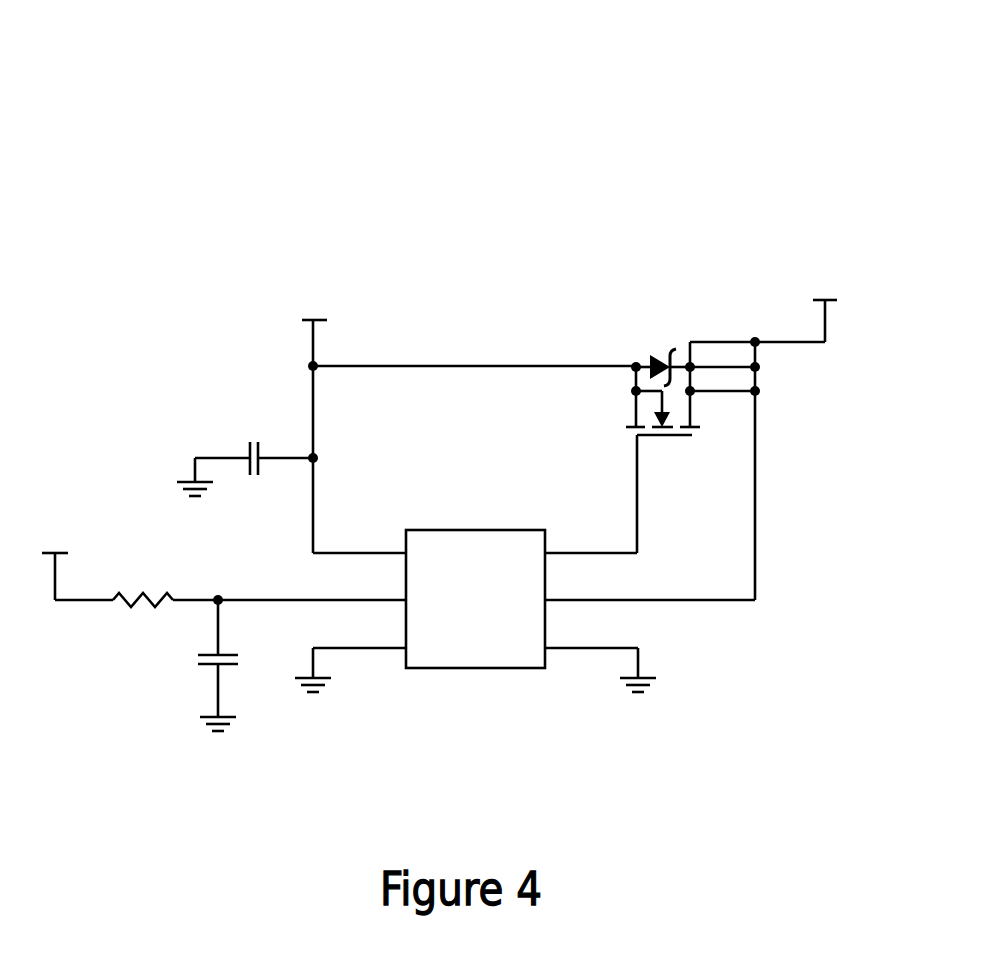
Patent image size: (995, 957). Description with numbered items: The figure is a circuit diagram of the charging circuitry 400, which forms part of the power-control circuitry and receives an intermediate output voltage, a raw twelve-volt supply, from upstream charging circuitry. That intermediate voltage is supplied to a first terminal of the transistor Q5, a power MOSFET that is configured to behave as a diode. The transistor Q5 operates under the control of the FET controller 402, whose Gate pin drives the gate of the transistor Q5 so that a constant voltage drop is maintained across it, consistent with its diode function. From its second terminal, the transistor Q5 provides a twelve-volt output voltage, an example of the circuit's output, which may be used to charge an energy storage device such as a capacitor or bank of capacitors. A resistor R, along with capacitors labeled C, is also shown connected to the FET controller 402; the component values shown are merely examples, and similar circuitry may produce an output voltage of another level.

The charging circuitry 400 is at (451, 373).
The FET controller 402 is at (494, 529).
The transistor Q5 is at (663, 378).
The resistor R is at (143, 604).